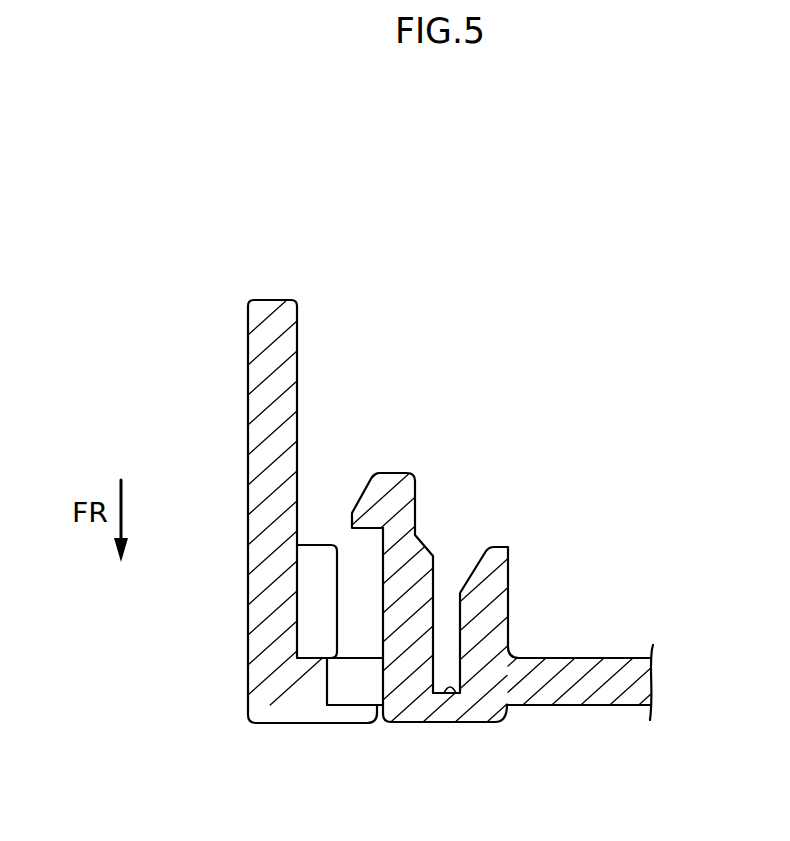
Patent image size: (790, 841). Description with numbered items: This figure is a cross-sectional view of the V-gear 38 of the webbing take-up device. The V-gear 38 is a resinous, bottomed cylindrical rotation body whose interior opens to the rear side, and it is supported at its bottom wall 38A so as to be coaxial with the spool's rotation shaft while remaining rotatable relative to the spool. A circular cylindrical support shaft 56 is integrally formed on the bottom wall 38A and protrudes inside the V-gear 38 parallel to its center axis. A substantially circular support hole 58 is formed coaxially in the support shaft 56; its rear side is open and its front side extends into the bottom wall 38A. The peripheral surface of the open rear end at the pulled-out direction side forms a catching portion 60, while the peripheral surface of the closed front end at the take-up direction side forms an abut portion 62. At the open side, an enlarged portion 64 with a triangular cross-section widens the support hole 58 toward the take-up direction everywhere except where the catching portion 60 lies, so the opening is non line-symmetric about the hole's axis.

The V-gear 38 is at (467, 225).
The bottom wall 38A is at (622, 657).
The support shaft 56 is at (508, 601).
The support hole 58 is at (434, 619).
The catching portion 60 is at (436, 560).
The abut portion 62 is at (452, 686).
The enlarged portion 64 is at (479, 562).